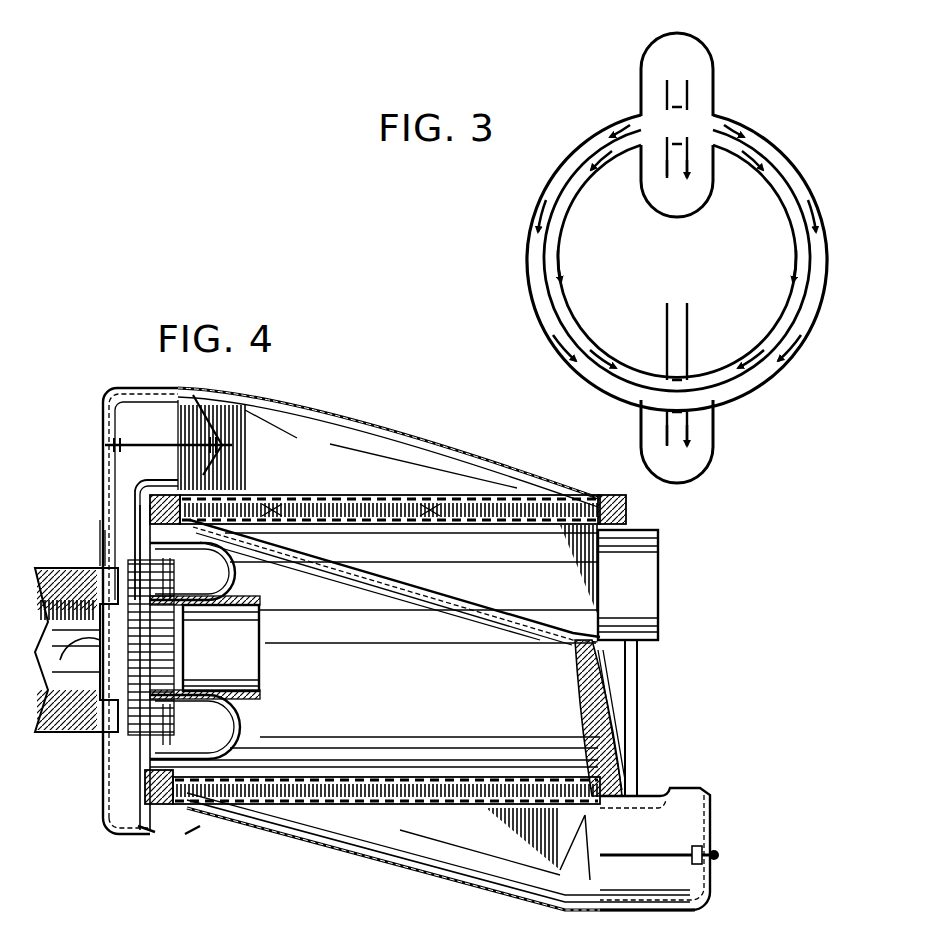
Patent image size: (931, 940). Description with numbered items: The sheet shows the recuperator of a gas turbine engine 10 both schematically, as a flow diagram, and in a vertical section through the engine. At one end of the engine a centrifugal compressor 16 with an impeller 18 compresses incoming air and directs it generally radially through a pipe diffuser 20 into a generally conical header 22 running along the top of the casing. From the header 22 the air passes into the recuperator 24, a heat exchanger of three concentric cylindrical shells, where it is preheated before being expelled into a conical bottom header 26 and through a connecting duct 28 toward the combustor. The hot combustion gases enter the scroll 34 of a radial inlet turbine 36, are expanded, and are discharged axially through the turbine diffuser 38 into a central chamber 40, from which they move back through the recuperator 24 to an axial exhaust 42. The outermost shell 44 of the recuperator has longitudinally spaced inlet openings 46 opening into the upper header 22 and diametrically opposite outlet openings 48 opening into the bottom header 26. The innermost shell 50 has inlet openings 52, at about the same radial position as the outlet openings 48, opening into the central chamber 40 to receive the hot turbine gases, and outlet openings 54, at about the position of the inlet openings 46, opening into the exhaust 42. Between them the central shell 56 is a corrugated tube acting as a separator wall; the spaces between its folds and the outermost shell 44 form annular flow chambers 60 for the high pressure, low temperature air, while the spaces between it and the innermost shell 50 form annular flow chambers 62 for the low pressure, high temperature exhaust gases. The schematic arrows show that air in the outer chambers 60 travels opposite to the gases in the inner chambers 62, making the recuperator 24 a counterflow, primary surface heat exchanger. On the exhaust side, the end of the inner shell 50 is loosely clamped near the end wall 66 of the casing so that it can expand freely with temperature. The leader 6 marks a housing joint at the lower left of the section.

In FIG. 4, the housing joint 6 is at (169, 842).
In FIG. 4, the engine 10 is at (494, 445).
In FIG. 4, the centrifugal compressor 16 is at (74, 707).
In FIG. 4, the impeller 18 is at (96, 575).
In FIG. 4, the pipe diffuser 20 is at (128, 527).
In FIG. 3, the conical header 22 is at (692, 78).
In FIG. 4, the conical header 22 is at (300, 411).
In FIG. 3, the recuperator 24 is at (784, 145).
In FIG. 4, the recuperator 24 is at (422, 521).
In FIG. 3, the conical bottom header 26 is at (686, 453).
In FIG. 4, the conical bottom header 26 is at (434, 879).
In FIG. 4, the connecting duct 28 is at (690, 899).
In FIG. 4, the scroll 34 is at (224, 727).
In FIG. 4, the radial inlet turbine 36 is at (172, 657).
In FIG. 4, the turbine diffuser 38 is at (256, 665).
In FIG. 4, the central chamber 40 is at (375, 688).
In FIG. 3, the axial exhaust 42 is at (682, 204).
In FIG. 4, the axial exhaust 42 is at (622, 593).
In FIG. 3, the outermost shell 44 is at (821, 242).
In FIG. 4, the outermost shell 44 is at (356, 495).
In FIG. 3, the inlet openings 46 is at (656, 102).
In FIG. 4, the inlet openings 46 is at (432, 495).
In FIG. 3, the outlet openings 48 is at (652, 417).
In FIG. 4, the outlet openings 48 is at (406, 803).
In FIG. 3, the innermost shell 50 is at (782, 236).
In FIG. 4, the innermost shell 50 is at (352, 519).
In FIG. 3, the inlet openings 52 is at (684, 369).
In FIG. 4, the inlet openings 52 is at (336, 769).
In FIG. 3, the outlet openings 54 is at (658, 158).
In FIG. 4, the outlet openings 54 is at (496, 521).
In FIG. 3, the central shell 56 is at (562, 234).
In FIG. 4, the central shell 56 is at (308, 495).
In FIG. 3, the annular flow chambers 60 is at (763, 374).
In FIG. 3, the annular flow chambers 62 is at (628, 369).
In FIG. 4, the end wall 66 is at (623, 717).